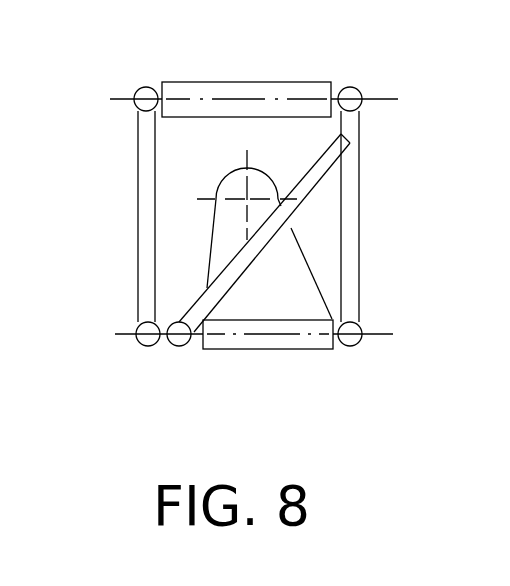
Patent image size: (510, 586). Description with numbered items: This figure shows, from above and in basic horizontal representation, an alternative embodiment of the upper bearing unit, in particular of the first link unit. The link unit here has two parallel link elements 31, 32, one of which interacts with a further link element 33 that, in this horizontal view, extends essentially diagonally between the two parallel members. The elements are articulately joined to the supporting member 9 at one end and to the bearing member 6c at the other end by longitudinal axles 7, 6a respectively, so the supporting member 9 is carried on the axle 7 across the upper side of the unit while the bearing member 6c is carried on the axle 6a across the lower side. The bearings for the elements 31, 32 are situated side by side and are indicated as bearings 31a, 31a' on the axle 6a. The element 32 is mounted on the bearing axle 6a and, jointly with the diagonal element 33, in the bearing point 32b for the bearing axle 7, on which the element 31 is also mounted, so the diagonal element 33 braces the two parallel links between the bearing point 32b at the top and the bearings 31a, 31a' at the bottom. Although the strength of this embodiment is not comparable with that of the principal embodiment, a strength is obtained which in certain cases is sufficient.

The longitudinal axle 7 is at (121, 99).
The supporting member 9 is at (258, 82).
The bearing point 32b is at (358, 90).
The link element 31 is at (138, 202).
The link element 32 is at (360, 188).
The link element 33 is at (318, 163).
The bearing member 6c is at (293, 302).
The longitudinal axle 6a is at (122, 336).
The bearing 31a' is at (145, 363).
The bearing 31a is at (202, 372).